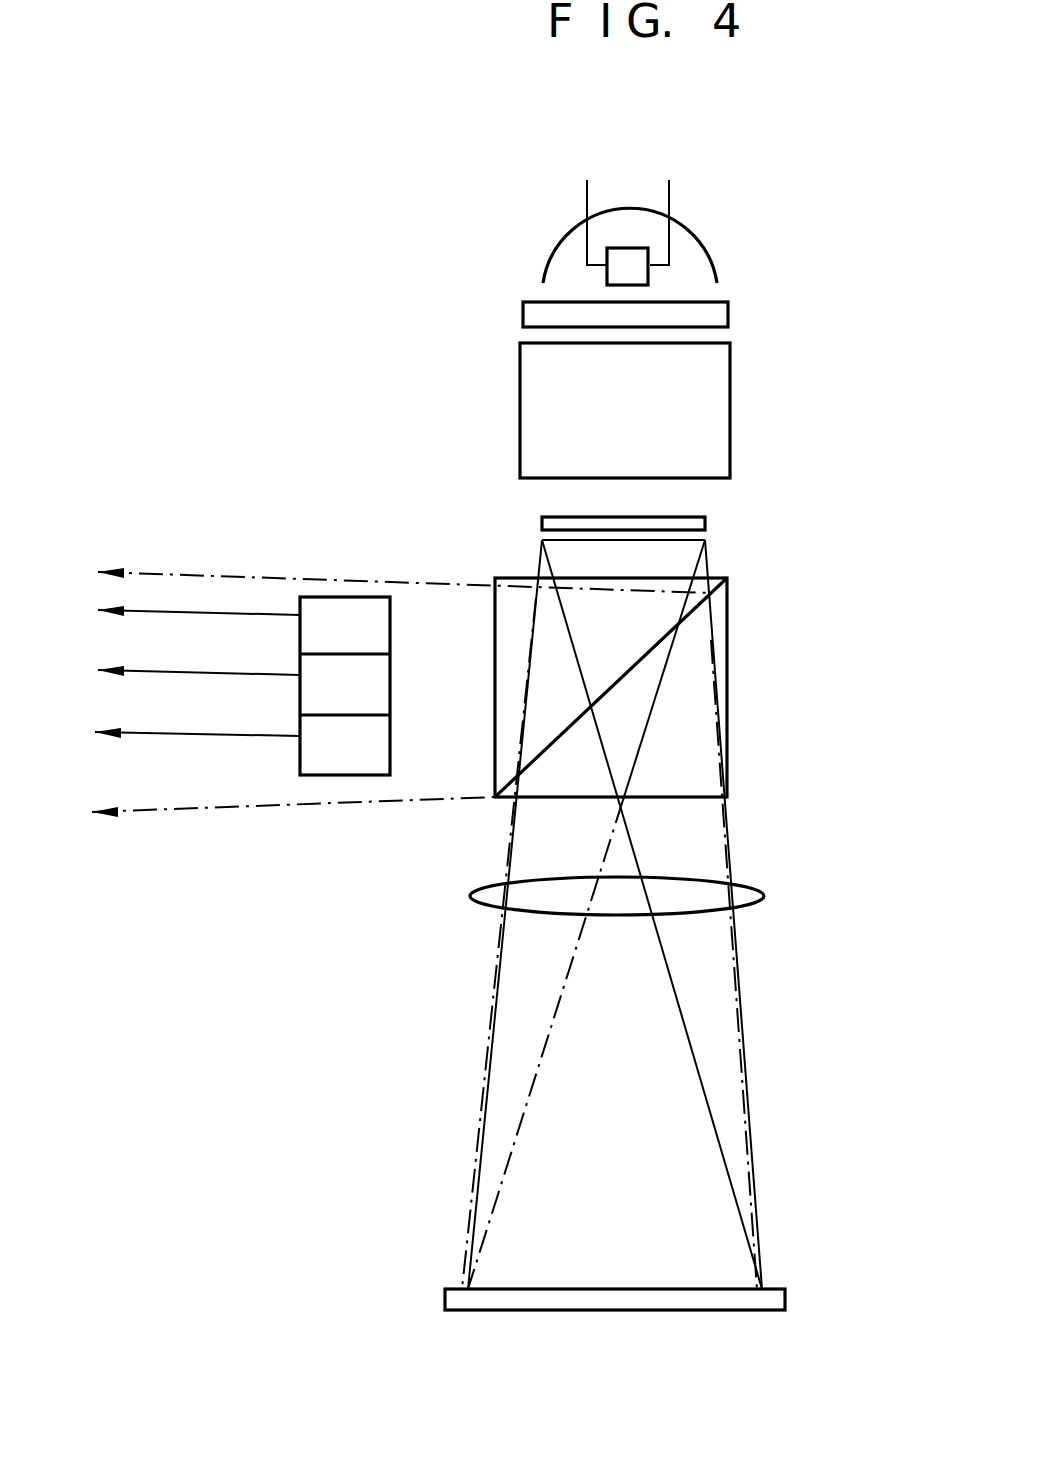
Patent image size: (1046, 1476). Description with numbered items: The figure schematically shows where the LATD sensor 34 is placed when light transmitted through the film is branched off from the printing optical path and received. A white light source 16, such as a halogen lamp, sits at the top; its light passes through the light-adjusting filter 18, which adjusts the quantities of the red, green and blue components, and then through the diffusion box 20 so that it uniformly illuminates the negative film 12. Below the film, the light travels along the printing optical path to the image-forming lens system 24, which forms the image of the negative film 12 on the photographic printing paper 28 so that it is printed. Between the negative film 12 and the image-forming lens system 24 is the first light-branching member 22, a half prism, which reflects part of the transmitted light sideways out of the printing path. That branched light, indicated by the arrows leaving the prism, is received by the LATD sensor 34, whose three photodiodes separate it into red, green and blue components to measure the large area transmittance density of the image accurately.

The negative film 12 is at (705, 523).
The white light source 16 is at (710, 265).
The light-adjusting filter 18 is at (728, 314).
The diffusion box 20 is at (730, 416).
The first light-branching member 22 is at (727, 642).
The image-forming lens system 24 is at (765, 896).
The photographic printing paper 28 is at (785, 1290).
The LATD sensor 34 is at (347, 597).